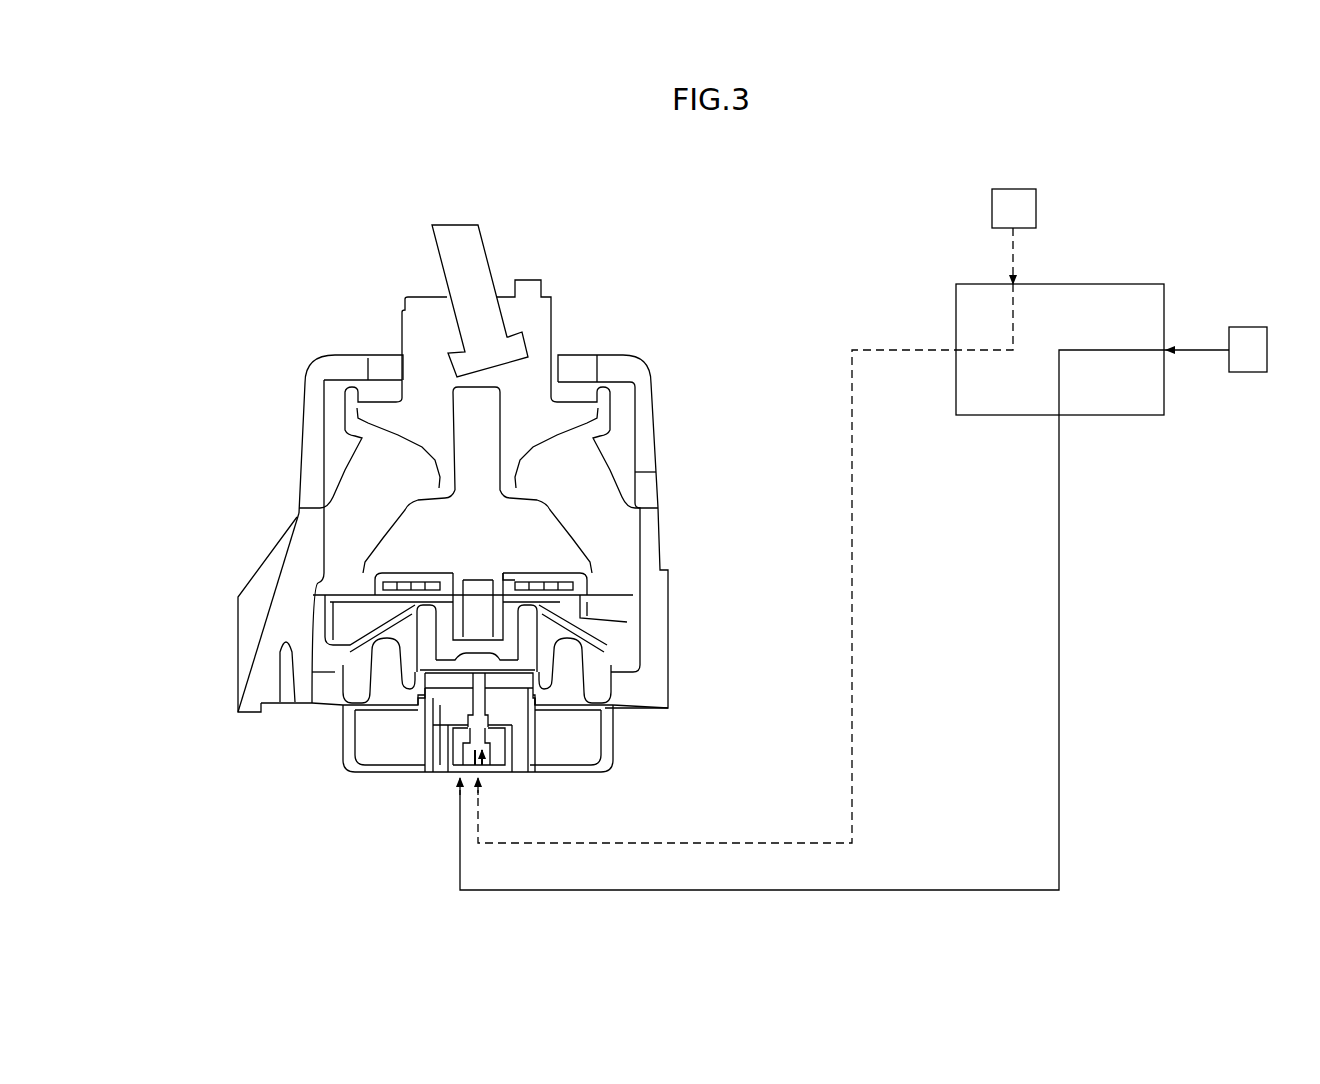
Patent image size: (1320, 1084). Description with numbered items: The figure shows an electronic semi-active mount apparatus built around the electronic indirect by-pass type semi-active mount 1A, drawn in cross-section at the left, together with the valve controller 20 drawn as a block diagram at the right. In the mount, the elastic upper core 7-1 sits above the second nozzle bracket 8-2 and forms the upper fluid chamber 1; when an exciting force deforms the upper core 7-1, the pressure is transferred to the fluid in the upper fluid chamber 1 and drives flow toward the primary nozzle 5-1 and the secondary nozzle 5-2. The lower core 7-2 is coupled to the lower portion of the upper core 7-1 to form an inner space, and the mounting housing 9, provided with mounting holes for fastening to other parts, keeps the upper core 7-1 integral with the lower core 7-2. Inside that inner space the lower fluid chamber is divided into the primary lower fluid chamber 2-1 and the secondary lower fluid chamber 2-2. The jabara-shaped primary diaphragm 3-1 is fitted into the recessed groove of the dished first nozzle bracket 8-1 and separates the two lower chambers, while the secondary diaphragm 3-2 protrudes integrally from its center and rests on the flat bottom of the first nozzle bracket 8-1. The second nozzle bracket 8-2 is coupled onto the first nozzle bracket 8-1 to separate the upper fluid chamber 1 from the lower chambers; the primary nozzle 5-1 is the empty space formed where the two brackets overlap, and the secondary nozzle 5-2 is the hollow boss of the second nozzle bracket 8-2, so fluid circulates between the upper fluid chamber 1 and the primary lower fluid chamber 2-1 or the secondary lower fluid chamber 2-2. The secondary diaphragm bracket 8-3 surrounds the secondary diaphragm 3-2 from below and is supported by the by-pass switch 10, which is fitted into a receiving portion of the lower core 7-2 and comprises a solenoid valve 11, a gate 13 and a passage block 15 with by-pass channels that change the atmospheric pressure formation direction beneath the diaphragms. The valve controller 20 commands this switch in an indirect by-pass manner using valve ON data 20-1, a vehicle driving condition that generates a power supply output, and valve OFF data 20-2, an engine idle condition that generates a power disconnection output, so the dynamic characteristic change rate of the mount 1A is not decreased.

The electronic indirect by-pass type semi-active mount 1A is at (676, 351).
The upper fluid chamber 1 is at (432, 523).
The primary lower fluid chamber 2-1 is at (592, 673).
The secondary lower fluid chamber 2-2 is at (510, 565).
The primary diaphragm 3-1 is at (340, 672).
The secondary diaphragm 3-2 is at (453, 648).
The primary nozzle 5-1 is at (343, 620).
The secondary nozzle 5-2 is at (477, 583).
The upper core 7-1 is at (525, 383).
The lower core 7-2 is at (610, 743).
The first nozzle bracket 8-1 is at (567, 607).
The second nozzle bracket 8-2 is at (545, 582).
The secondary diaphragm bracket 8-3 is at (530, 658).
The mounting housing 9 is at (304, 385).
The by-pass switch 10 is at (378, 786).
The solenoid valve 11 is at (470, 742).
The gate 13 is at (477, 705).
The passage block 15 is at (443, 738).
The valve controller 20 is at (1097, 283).
The valve ON data 20-1 is at (992, 208).
The valve OFF data 20-2 is at (1247, 327).